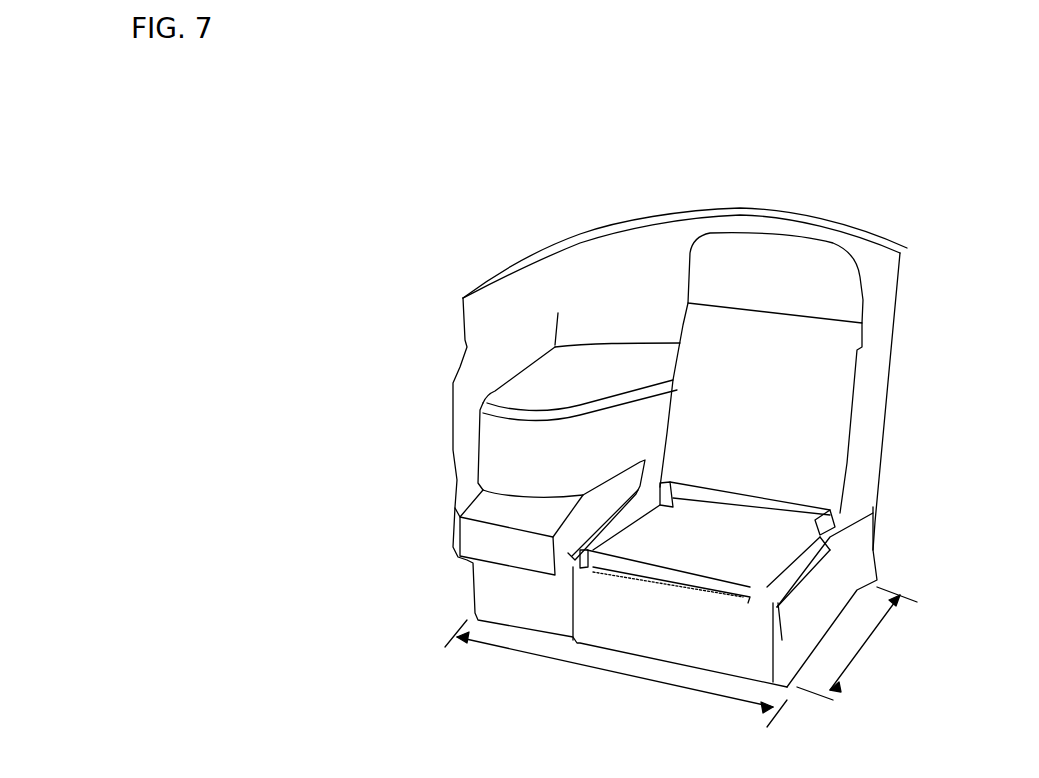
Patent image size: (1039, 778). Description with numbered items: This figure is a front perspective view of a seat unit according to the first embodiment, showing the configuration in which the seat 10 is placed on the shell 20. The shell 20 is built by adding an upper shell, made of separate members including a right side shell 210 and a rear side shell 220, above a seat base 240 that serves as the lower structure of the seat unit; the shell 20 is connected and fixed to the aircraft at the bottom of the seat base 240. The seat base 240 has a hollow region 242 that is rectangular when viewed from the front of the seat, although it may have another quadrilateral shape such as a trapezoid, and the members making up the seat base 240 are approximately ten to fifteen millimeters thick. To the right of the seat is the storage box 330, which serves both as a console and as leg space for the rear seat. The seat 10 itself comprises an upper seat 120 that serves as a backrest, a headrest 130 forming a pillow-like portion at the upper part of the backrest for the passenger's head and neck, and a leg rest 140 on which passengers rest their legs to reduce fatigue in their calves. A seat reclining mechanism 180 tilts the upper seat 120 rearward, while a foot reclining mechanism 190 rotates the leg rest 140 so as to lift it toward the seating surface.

The seat 10 is at (740, 547).
The shell 20 is at (871, 192).
The upper seat 120 is at (830, 393).
The headrest 130 is at (853, 300).
The leg rest 140 is at (618, 642).
The seat reclining mechanism 180 is at (840, 520).
The foot reclining mechanism 190 is at (825, 575).
The right side shell 210 is at (467, 348).
The rear side shell 220 is at (752, 210).
The seat base 240 is at (820, 623).
The hollow region 242 is at (510, 597).
The storage box 330 is at (573, 390).